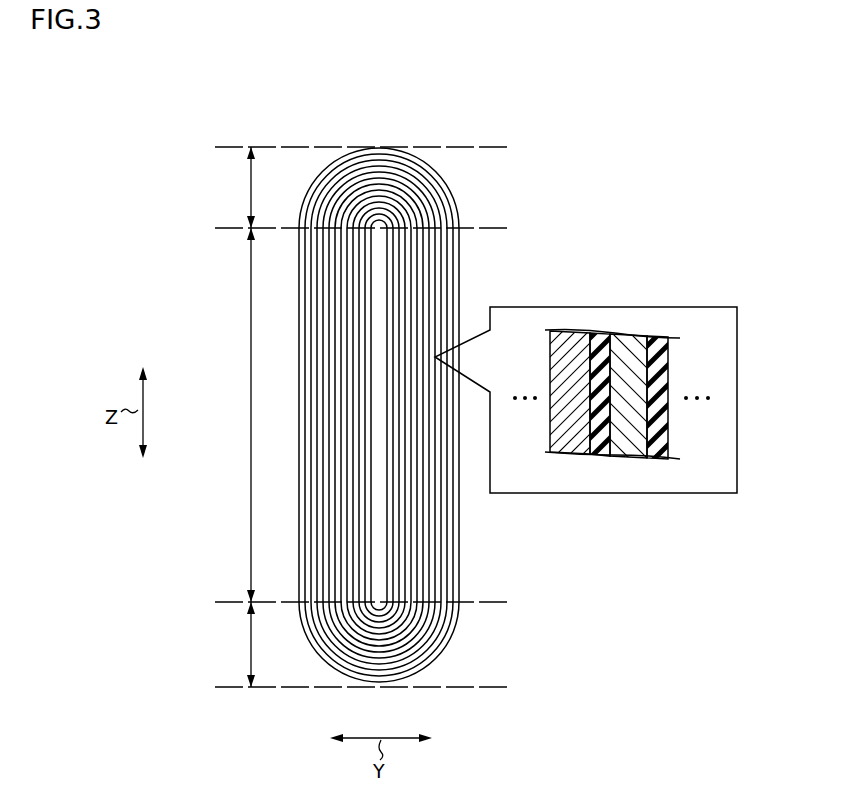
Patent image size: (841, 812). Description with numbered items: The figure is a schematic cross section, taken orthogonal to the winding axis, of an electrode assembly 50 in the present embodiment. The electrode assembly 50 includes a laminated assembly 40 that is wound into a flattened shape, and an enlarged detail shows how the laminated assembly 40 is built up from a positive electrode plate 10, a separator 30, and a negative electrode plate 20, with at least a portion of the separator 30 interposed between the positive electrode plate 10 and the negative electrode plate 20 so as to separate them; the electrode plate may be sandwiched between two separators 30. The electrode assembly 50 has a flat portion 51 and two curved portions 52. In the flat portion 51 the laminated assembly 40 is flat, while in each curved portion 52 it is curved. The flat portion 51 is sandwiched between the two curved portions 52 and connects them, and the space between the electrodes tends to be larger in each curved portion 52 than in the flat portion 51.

The positive electrode plate 10 is at (571, 458).
The negative electrode plate 20 is at (637, 460).
The separator 30 is at (605, 460).
The laminated assembly 40 is at (602, 456).
The electrode assembly 50 is at (282, 100).
The flat portion 51 is at (236, 415).
The curved portion 52 is at (236, 417).